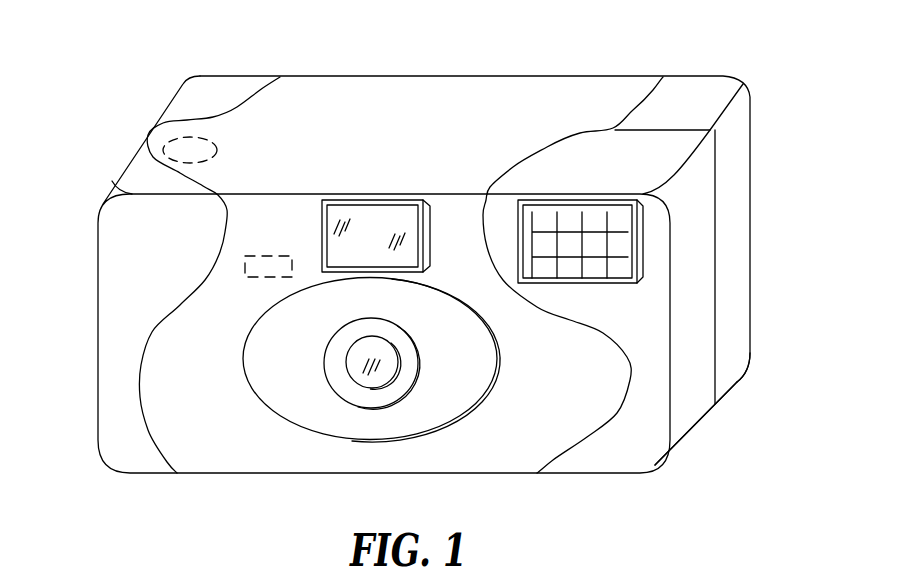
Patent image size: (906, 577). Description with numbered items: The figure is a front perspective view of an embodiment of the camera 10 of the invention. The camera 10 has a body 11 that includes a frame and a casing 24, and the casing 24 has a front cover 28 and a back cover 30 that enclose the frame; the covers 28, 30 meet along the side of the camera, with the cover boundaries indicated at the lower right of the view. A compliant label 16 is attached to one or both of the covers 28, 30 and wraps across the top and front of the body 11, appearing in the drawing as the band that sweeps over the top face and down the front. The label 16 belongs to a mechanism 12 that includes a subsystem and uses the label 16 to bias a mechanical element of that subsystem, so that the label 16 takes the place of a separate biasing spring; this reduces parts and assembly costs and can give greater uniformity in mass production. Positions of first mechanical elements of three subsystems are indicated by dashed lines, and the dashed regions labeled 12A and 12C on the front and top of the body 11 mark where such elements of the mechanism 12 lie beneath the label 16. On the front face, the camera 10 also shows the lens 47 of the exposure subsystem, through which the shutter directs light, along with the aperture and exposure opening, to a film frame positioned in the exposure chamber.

The camera 10 is at (455, 59).
The body 11 is at (751, 242).
The compliant label 16 is at (170, 387).
The mechanism 12 is at (231, 192).
The indicia region on top face 12C is at (212, 144).
The indicia region on front face 12A is at (244, 265).
The lens 47 is at (355, 355).
The casing 24 is at (757, 409).
The back cover 30 is at (740, 380).
The front cover 28 is at (703, 427).